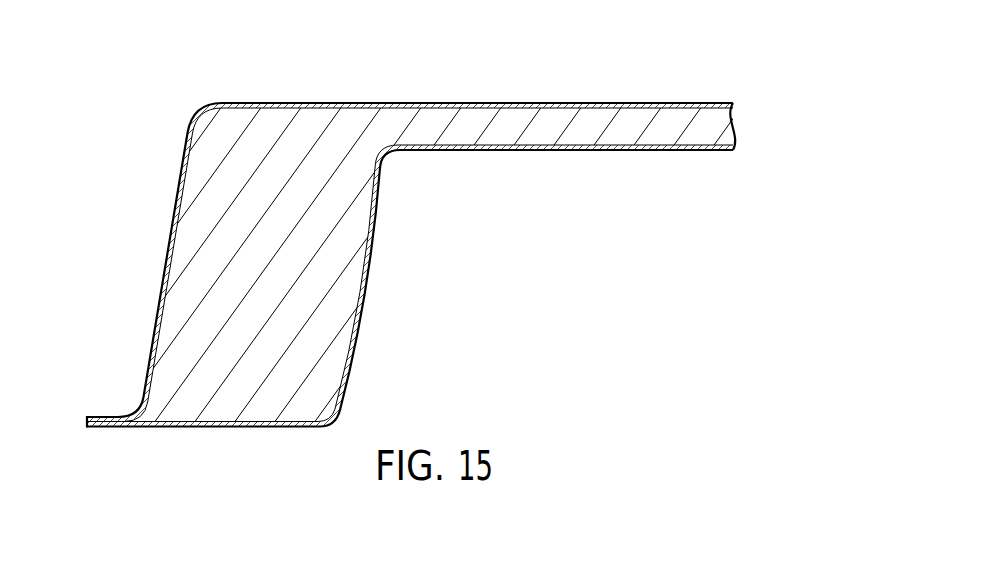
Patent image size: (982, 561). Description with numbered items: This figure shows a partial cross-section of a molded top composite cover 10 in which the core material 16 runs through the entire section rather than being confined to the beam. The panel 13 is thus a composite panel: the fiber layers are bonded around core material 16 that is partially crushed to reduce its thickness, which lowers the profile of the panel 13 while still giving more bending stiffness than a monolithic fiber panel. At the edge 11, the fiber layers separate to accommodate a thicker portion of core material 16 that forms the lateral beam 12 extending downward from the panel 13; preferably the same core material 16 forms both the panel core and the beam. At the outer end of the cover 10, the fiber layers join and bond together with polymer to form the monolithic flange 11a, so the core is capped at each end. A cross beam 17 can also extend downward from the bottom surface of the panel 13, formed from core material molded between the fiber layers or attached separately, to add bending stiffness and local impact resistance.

The top composite cover 10 is at (420, 231).
The edge 11 is at (171, 233).
The flange 11a is at (110, 416).
The lateral beam 12 is at (358, 277).
The panel 13 is at (587, 101).
The core material 16 is at (313, 338).
The cross beam 17 is at (575, 152).